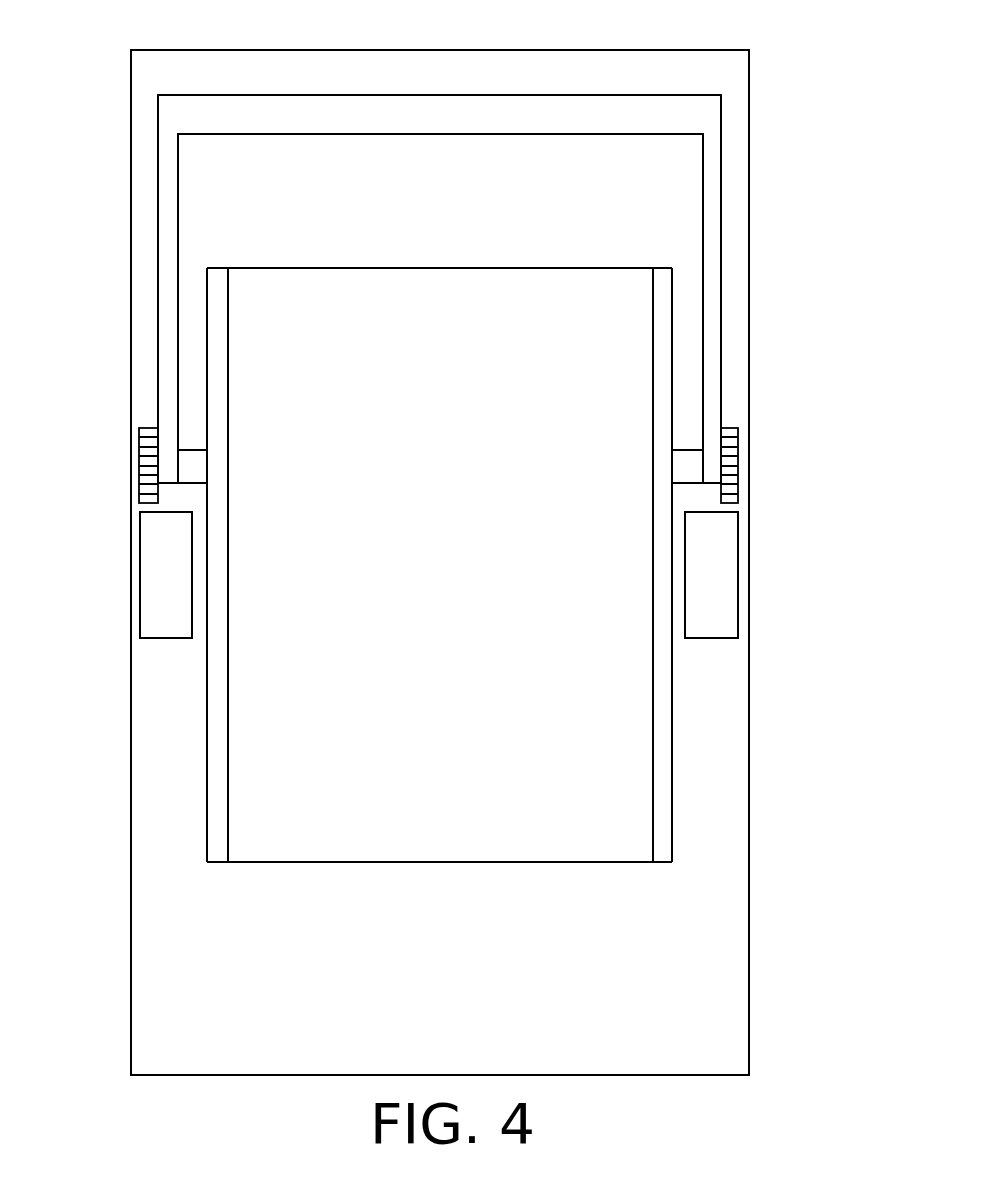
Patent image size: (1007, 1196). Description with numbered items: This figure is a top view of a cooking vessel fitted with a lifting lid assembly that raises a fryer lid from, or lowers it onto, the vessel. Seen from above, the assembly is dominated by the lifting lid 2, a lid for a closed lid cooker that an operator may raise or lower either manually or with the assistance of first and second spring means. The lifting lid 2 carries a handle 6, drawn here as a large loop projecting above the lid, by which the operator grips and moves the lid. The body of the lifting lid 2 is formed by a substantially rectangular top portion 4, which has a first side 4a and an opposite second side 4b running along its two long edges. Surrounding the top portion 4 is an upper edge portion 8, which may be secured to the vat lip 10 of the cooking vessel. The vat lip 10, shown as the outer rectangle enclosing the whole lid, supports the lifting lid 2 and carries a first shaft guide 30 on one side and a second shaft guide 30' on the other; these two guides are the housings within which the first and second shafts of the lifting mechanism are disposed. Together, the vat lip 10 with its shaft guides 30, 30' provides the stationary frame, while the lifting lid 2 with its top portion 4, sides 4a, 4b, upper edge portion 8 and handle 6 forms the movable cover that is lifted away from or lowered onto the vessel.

The lifting lid 2 is at (290, 872).
The top portion 4 is at (615, 788).
The first side 4a is at (220, 837).
The second side 4b is at (653, 843).
The handle 6 is at (352, 105).
The upper edge portion 8 is at (213, 758).
The vat lip 10 is at (697, 993).
The first shaft guide 30 is at (111, 533).
The second shaft guide 30' is at (783, 533).